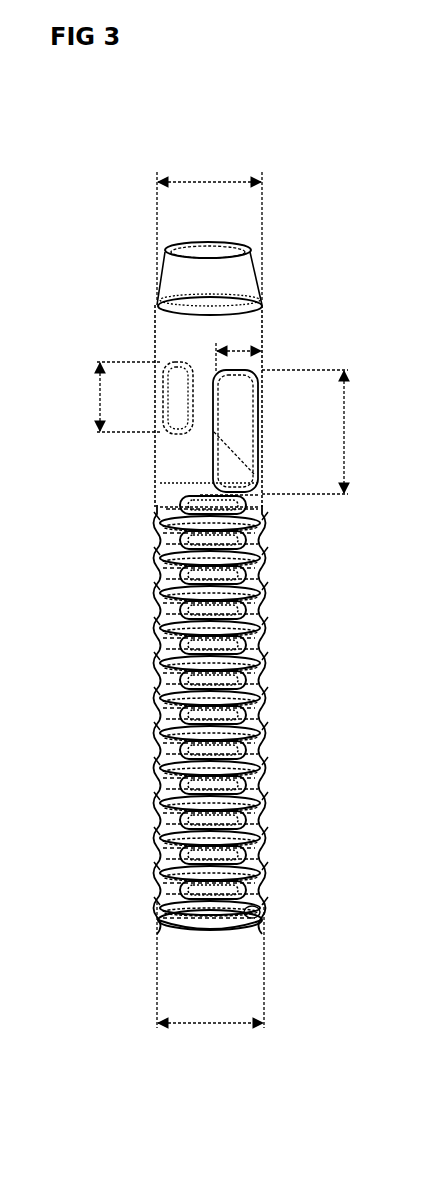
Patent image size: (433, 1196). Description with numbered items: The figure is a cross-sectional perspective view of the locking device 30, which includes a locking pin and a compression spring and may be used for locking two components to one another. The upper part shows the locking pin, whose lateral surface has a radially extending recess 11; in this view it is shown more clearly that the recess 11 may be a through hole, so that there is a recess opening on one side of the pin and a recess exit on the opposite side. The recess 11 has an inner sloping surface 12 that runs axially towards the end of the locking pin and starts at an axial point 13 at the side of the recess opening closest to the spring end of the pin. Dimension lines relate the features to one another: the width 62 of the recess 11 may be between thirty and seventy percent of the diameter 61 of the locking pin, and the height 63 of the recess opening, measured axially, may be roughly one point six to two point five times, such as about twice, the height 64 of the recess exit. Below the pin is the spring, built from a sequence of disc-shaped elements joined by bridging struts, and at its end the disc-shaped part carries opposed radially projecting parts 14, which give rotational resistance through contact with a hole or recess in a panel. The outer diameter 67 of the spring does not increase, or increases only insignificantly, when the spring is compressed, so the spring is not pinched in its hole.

The locking device 30 is at (98, 296).
The recess 11 is at (272, 444).
The inner sloping surface 12 is at (192, 438).
The axial point 13 is at (262, 494).
The radially projecting parts 14 is at (255, 912).
The diameter of the locking pin 61 is at (209, 222).
The width of the recess 62 is at (238, 350).
The height of the recess opening 63 is at (321, 432).
The height of the recess exit 64 is at (111, 397).
The outer diameter of the spring 67 is at (210, 965).